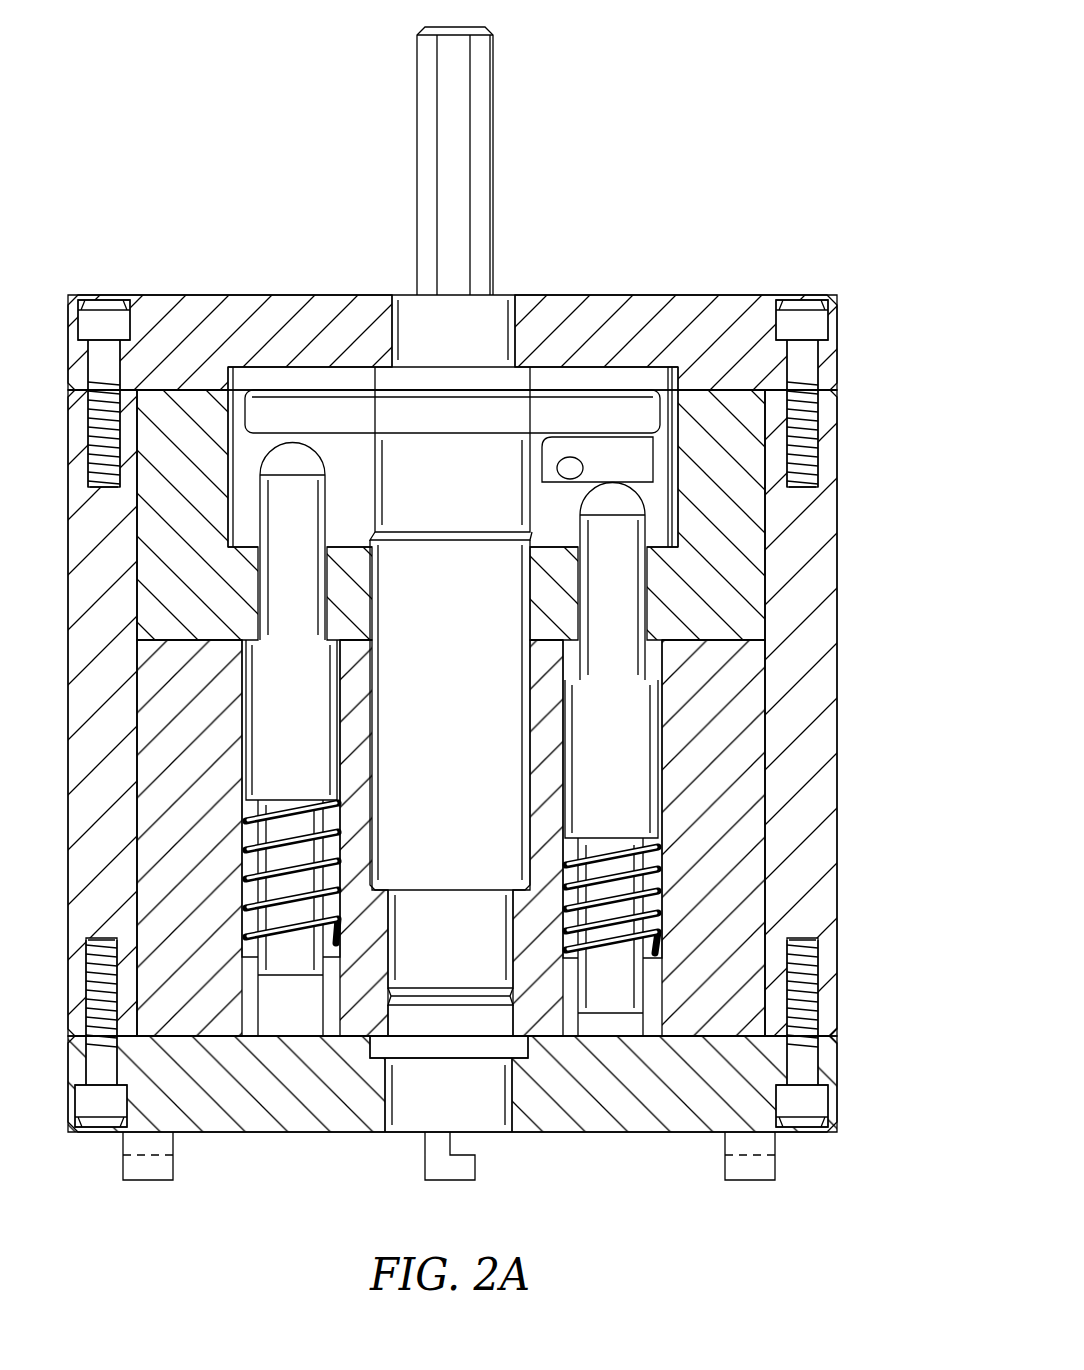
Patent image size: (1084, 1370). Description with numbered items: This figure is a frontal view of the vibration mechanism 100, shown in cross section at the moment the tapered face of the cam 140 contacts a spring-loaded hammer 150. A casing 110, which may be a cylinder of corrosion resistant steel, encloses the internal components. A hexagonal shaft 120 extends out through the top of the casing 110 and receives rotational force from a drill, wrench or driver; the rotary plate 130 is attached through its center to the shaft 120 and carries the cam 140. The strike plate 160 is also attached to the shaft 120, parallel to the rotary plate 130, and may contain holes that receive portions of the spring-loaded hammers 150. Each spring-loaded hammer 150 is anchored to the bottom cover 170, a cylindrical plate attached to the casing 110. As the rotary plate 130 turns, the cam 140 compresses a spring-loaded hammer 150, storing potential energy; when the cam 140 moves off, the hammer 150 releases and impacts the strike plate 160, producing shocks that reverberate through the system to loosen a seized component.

The vibration mechanism 100 is at (714, 133).
The casing 110 is at (837, 725).
The shaft 120 is at (475, 497).
The rotary plate 130 is at (568, 390).
The cam 140 is at (630, 457).
The spring-loaded hammer 150 is at (577, 597).
The strike plate 160 is at (755, 547).
The bottom cover 170 is at (590, 1122).